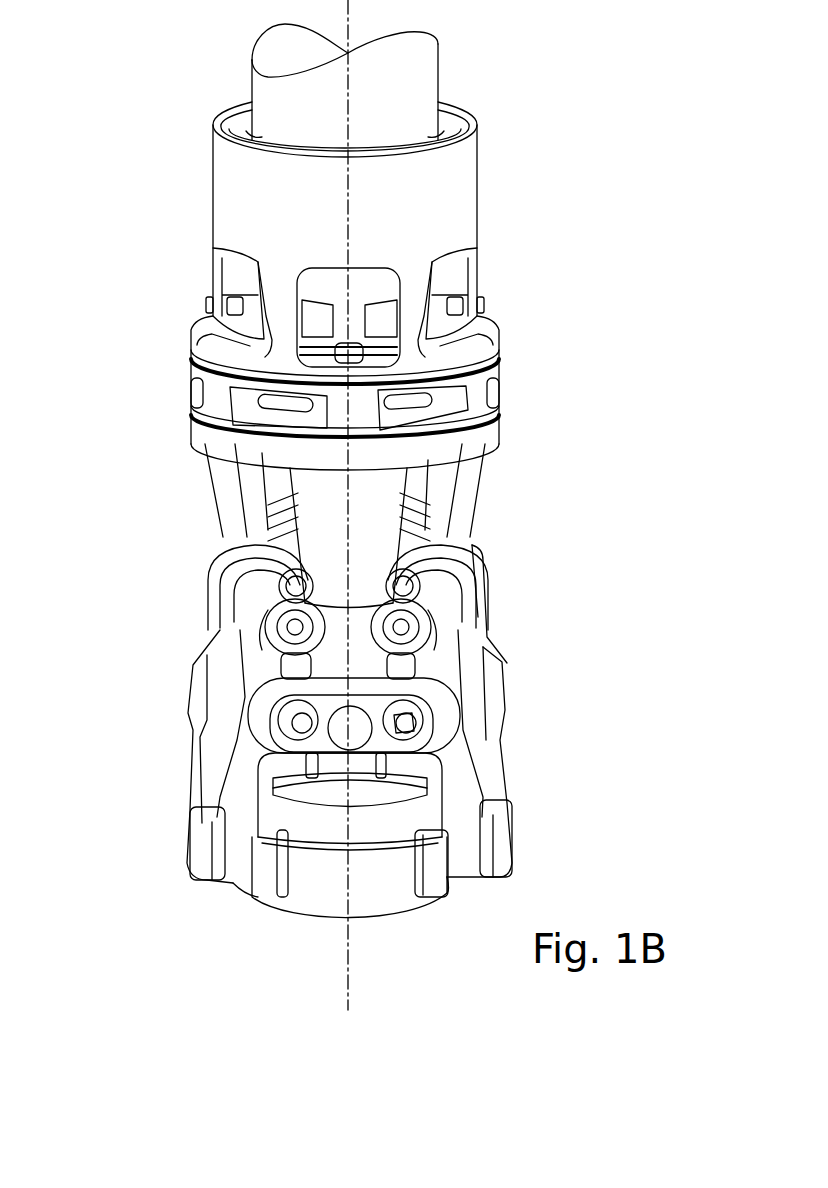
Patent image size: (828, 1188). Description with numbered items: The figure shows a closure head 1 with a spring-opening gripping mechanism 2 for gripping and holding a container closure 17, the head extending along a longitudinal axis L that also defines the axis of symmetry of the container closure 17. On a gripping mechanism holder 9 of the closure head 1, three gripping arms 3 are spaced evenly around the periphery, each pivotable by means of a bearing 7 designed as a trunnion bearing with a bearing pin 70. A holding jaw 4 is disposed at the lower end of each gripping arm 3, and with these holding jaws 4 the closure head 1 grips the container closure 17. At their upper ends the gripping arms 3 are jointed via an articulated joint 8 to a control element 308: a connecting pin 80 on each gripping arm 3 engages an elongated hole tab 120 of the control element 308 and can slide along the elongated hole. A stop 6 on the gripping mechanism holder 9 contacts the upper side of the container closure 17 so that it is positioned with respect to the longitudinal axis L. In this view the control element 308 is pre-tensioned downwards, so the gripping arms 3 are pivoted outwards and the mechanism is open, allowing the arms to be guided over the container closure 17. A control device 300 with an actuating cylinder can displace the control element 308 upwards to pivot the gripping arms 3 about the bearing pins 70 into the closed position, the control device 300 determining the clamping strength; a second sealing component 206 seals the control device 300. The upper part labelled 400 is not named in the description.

The closure head 1 is at (220, 925).
The gripping mechanism 2 is at (520, 638).
The gripping arm 3 is at (483, 690).
The holding jaw 4 is at (437, 885).
The stop 6 is at (330, 797).
The bearing 7 is at (187, 732).
The articulated joint 8 is at (187, 607).
The gripping mechanism holder 9 is at (310, 490).
The container closure 17 is at (398, 890).
The bearing pin 70 is at (413, 725).
The connecting pin 80 is at (405, 586).
The elongated hole tab 120 is at (300, 588).
The second sealing component 206 is at (418, 520).
The control device 300 is at (427, 482).
The control element 308 is at (312, 555).
The upper cap housing 400 is at (502, 273).
The longitudinal axis L is at (348, 1010).